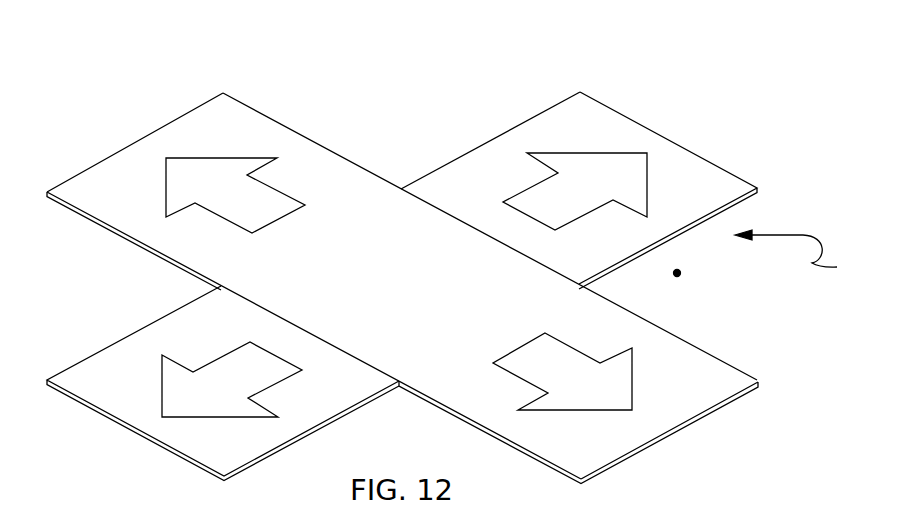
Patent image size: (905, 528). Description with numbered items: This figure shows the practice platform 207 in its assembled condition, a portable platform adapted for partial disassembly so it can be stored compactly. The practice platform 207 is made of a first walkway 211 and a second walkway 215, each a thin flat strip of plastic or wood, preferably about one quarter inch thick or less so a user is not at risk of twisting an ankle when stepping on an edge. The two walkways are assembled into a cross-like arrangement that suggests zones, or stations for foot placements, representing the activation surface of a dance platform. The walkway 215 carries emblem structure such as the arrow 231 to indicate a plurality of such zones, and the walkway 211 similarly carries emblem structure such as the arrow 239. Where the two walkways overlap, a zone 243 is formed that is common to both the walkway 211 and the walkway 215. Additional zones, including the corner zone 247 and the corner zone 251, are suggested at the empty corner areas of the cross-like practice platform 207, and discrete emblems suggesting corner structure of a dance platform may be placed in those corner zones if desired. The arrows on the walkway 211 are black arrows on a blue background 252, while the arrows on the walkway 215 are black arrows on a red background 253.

The practice platform 207 is at (808, 257).
The first walkway 211 is at (703, 377).
The second walkway 215 is at (712, 197).
The emblem structure 231 is at (605, 185).
The emblem structure 239 is at (188, 190).
The zone 243 is at (372, 284).
The corner zone 247 is at (680, 274).
The corner zone 251 is at (357, 92).
The blue background 252 is at (602, 427).
The red background 253 is at (568, 134).